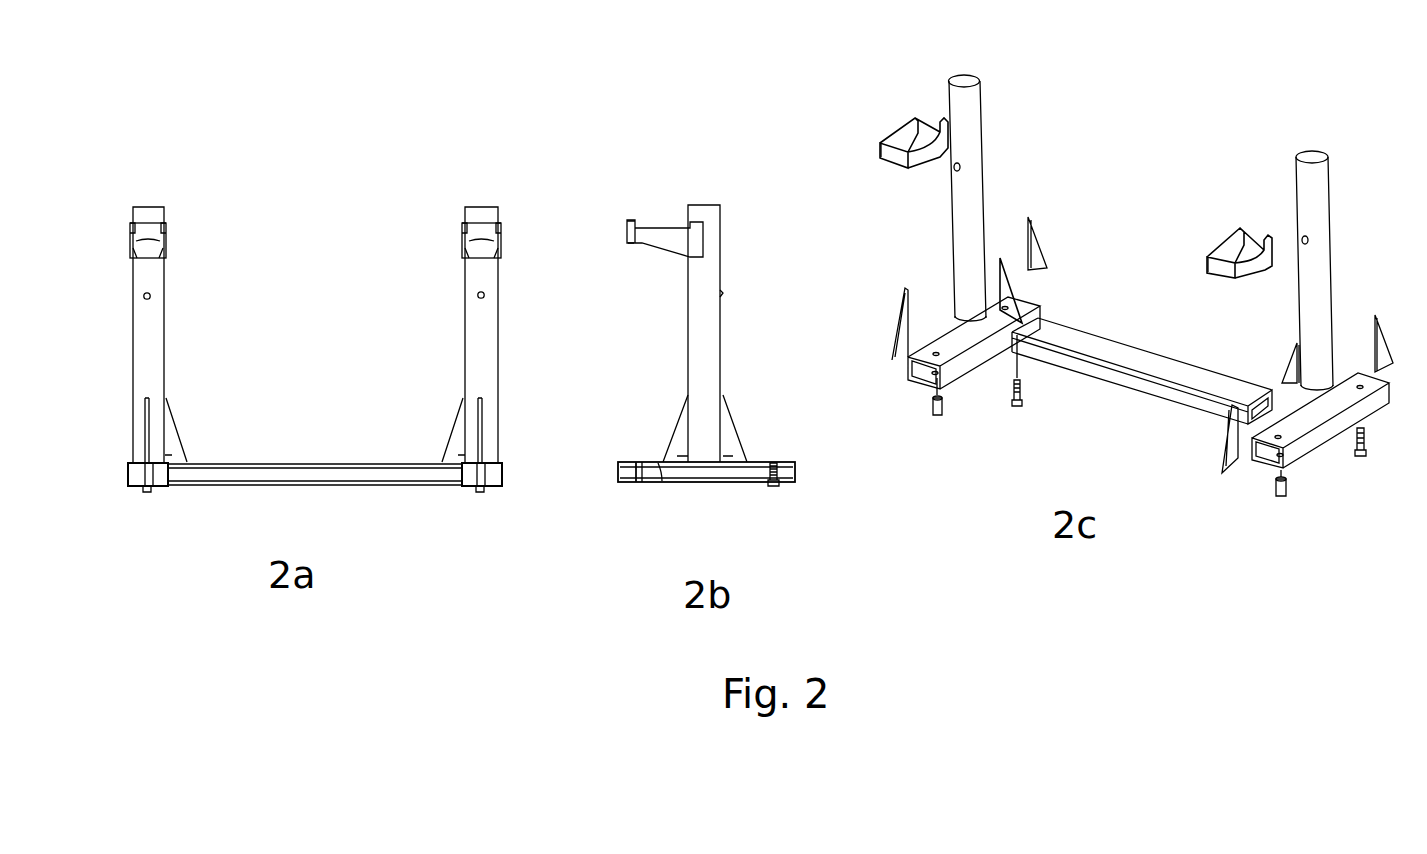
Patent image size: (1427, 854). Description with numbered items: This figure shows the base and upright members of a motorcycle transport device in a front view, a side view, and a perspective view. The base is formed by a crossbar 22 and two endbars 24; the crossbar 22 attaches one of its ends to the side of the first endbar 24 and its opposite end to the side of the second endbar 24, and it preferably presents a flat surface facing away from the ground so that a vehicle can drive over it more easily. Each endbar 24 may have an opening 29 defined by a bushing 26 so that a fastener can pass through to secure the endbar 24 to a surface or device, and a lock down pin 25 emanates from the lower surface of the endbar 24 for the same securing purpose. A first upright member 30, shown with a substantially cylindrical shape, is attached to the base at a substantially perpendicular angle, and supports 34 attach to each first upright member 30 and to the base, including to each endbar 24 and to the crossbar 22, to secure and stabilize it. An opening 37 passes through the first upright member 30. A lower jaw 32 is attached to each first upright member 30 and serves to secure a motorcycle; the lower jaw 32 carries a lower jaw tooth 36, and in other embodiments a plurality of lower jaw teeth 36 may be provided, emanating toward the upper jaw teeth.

The crossbar 22 is at (318, 470).
The endbar 24 is at (496, 476).
The lock down pin 25 is at (483, 494).
The bushing 26 is at (640, 480).
The opening 29 is at (640, 470).
The first upright member 30 is at (150, 360).
The lower jaw 32 is at (152, 235).
The support 34 is at (170, 437).
The lower jaw tooth 36 is at (628, 234).
The opening 37 is at (152, 290).